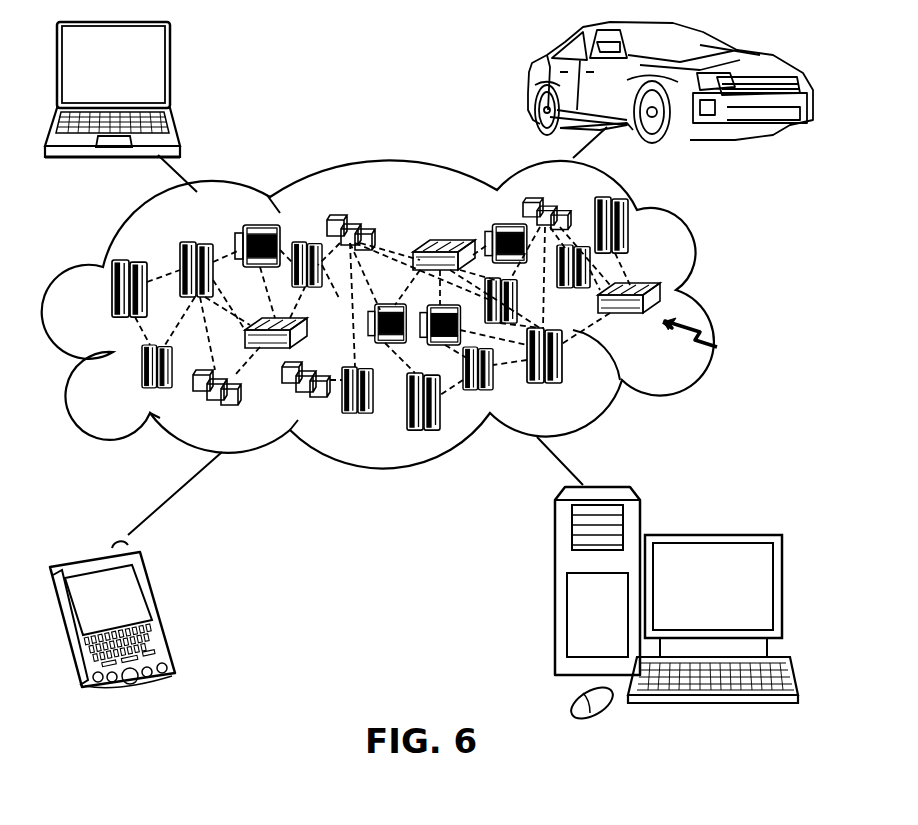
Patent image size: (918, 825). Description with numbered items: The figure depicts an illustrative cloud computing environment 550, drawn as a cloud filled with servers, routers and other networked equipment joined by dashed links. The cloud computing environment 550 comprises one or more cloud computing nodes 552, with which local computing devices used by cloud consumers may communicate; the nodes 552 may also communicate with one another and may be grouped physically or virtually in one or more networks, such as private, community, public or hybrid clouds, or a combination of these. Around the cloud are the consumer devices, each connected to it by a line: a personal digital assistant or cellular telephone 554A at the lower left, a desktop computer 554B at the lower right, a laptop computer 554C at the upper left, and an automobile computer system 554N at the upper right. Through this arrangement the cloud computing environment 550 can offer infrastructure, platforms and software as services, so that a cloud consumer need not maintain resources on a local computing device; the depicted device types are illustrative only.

The cloud computing environment 550 is at (712, 297).
The cloud computing nodes 552 is at (714, 343).
The personal digital assistant (PDA) or cellular telephone 554A is at (163, 611).
The desktop computer 554B is at (710, 535).
The laptop computer 554C is at (174, 66).
The automobile computer system 554N is at (530, 82).